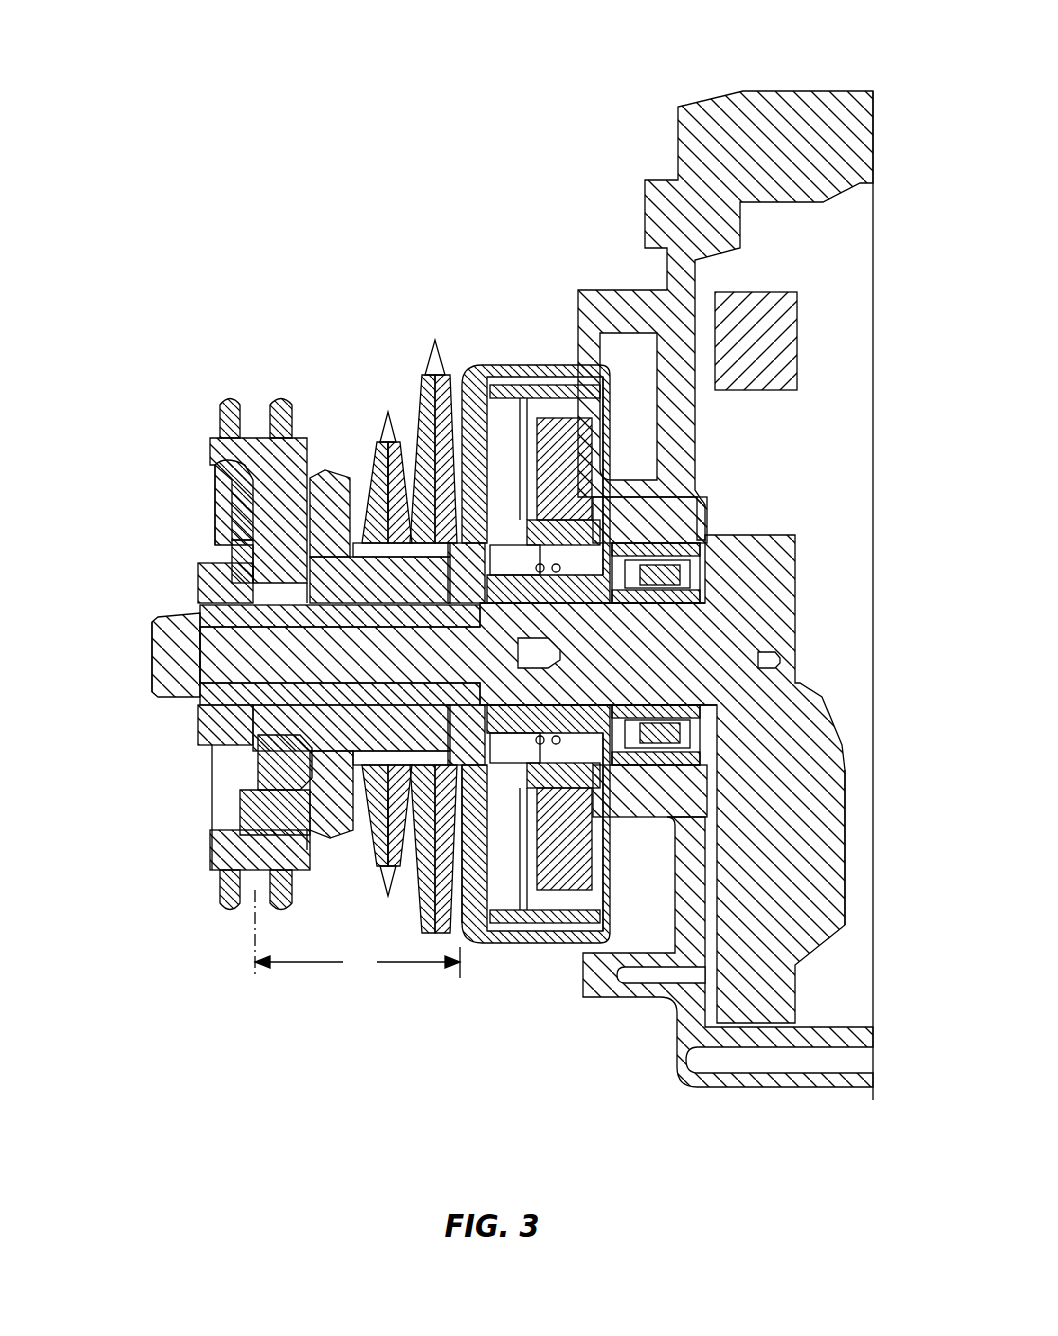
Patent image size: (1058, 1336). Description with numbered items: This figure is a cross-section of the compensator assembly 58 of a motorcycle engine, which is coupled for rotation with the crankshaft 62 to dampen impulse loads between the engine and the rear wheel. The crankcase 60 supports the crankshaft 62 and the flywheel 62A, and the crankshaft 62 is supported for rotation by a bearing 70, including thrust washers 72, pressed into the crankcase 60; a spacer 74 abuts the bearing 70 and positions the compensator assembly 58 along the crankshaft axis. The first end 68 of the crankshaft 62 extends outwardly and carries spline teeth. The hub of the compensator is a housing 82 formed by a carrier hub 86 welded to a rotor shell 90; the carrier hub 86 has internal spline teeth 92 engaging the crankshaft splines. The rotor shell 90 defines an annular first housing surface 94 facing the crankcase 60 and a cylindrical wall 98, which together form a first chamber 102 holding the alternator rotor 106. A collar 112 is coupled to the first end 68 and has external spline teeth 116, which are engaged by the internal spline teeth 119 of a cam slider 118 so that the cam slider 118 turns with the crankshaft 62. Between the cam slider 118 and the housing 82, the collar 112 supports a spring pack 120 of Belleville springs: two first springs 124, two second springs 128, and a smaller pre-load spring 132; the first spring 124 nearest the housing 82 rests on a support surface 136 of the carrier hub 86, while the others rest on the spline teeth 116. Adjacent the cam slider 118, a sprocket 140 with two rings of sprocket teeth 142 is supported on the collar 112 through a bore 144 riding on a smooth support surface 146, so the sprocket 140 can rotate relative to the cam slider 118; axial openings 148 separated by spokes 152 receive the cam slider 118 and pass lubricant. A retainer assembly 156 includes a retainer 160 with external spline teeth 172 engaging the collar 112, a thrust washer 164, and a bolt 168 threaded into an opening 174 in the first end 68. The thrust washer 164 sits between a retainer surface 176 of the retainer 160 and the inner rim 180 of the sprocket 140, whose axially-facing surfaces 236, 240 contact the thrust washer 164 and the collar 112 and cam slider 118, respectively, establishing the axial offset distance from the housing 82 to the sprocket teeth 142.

The compensator assembly 58 is at (203, 977).
The crankcase 60 is at (790, 90).
The crankshaft 62 is at (522, 779).
The flywheel 62A is at (758, 893).
The first end of the crankshaft 68 is at (157, 641).
The bearing 70 is at (657, 733).
The thrust washers 72 is at (612, 548).
The spacer 74 is at (450, 705).
The housing 82 is at (652, 653).
The carrier hub 86 is at (478, 557).
The rotor shell 90 is at (457, 520).
The internal spline teeth 92 is at (615, 626).
The first housing surface 94 is at (483, 890).
The cylindrical wall 98 is at (522, 366).
The first chamber 102 is at (588, 904).
The alternator rotor 106 is at (594, 330).
The collar 112 is at (364, 595).
The external spline teeth 116 is at (322, 470).
The cam slider 118 is at (362, 845).
The internal spline teeth 119 is at (250, 867).
The spring pack 120 is at (401, 579).
The first springs 124 is at (436, 346).
The second springs 128 is at (388, 414).
The pre-load spring 132 is at (363, 500).
The support surface 136 is at (473, 942).
The sprocket 140 is at (208, 455).
The sprocket teeth 142 is at (253, 400).
The bore 144 is at (297, 560).
The support surface 146 is at (313, 852).
The axial openings 148 is at (232, 472).
The spokes 152 is at (270, 494).
The retainer assembly 156 is at (132, 695).
The retainer 160 is at (217, 594).
The thrust washer 164 is at (240, 733).
The bolt 168 is at (185, 673).
The external spline teeth 172 is at (200, 613).
The opening 174 is at (552, 663).
The retainer surface 176 is at (247, 745).
The inner rim 180 is at (250, 707).
The axially-facing surface 236 is at (255, 748).
The axially-facing surface 240 is at (373, 858).